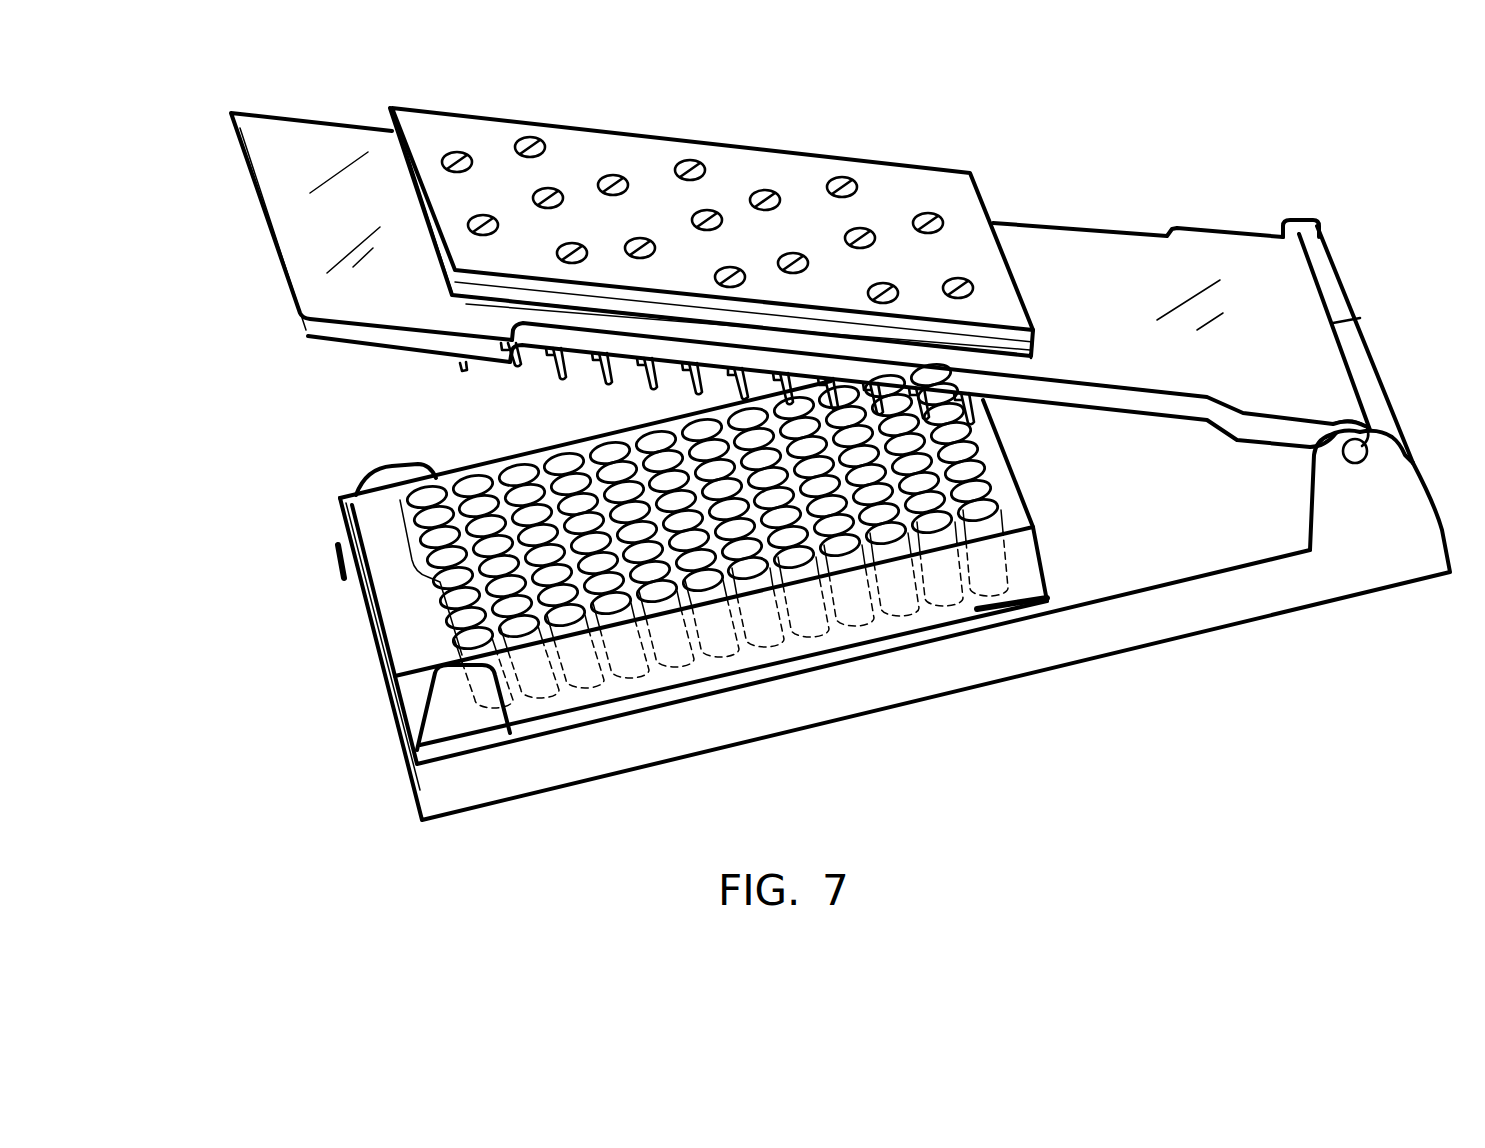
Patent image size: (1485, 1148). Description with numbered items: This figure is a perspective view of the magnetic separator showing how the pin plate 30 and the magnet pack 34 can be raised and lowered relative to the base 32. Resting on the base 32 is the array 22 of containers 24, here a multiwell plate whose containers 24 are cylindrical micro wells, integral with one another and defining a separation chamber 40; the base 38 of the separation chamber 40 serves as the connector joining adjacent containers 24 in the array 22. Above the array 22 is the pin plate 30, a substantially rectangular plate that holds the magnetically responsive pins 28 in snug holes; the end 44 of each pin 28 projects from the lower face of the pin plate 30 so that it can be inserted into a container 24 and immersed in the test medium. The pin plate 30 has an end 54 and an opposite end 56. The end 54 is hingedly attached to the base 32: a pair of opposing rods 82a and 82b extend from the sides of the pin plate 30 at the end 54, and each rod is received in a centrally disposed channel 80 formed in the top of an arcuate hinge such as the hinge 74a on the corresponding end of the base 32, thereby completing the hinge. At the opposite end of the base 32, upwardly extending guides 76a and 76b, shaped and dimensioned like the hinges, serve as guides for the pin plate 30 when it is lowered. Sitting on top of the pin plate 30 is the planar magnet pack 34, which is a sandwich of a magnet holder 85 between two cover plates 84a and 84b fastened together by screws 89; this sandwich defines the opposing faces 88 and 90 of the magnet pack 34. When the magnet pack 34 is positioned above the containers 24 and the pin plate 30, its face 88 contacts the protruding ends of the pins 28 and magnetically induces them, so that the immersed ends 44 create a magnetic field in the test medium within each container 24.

The array 22 is at (417, 577).
The container 24 is at (513, 463).
The pin 28 is at (550, 380).
The pin plate 30 is at (1053, 247).
The base 32 is at (720, 728).
The magnet pack 34 is at (933, 180).
The base 38 is at (907, 583).
The separation chamber 40 is at (622, 695).
The end 44 is at (640, 390).
The end 54 is at (1322, 287).
The end 56 is at (262, 225).
The hinge 74a is at (1380, 490).
The guide 76a is at (448, 718).
The guide 76b is at (387, 470).
The channel 80 is at (1355, 463).
The rod 82a is at (1347, 427).
The rod 82b is at (1278, 223).
The cover plate 84a is at (505, 280).
The cover plate 84b is at (475, 306).
The magnet holder 85 is at (452, 282).
The face 88 is at (1015, 370).
The screws 89 is at (830, 173).
The face 90 is at (1005, 303).